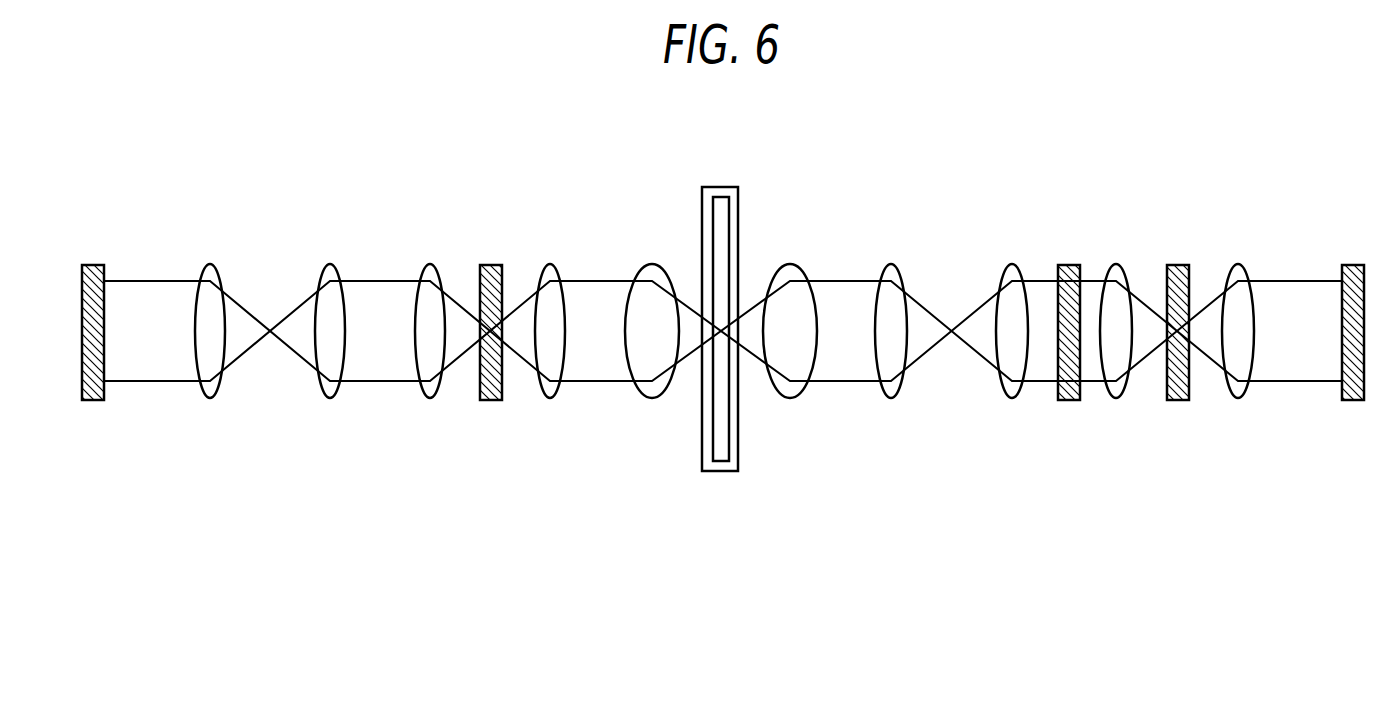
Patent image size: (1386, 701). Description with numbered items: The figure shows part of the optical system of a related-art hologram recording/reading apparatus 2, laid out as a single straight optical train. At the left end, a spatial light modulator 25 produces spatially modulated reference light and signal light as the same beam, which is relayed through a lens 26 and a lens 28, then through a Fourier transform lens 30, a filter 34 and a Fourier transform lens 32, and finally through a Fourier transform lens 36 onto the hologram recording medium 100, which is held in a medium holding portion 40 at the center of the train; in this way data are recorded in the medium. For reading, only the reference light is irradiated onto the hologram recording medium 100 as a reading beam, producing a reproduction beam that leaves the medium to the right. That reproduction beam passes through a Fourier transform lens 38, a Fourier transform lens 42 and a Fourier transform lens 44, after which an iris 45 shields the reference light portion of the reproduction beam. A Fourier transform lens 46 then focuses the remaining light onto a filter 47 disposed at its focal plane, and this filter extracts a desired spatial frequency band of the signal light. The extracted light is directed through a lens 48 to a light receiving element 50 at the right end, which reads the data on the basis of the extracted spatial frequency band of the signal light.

The hologram recording/reading apparatus 2 is at (473, 506).
The spatial light modulator 25 is at (93, 265).
The lens 26 is at (210, 263).
The lens 28 is at (330, 263).
The Fourier transform lens 30 is at (430, 263).
The Fourier transform lens 32 is at (550, 263).
The filter 34 is at (491, 265).
The Fourier transform lens 36 is at (652, 263).
The Fourier transform lens 38 is at (790, 263).
The medium holding portion 40 is at (718, 471).
The Fourier transform lens 42 is at (891, 263).
The Fourier transform lens 44 is at (1012, 263).
The iris 45 is at (1069, 265).
The Fourier transform lens 46 is at (1116, 263).
The filter 47 is at (1178, 265).
The lens 48 is at (1238, 263).
The light receiving element 50 is at (1353, 265).
The hologram recording medium 100 is at (720, 197).